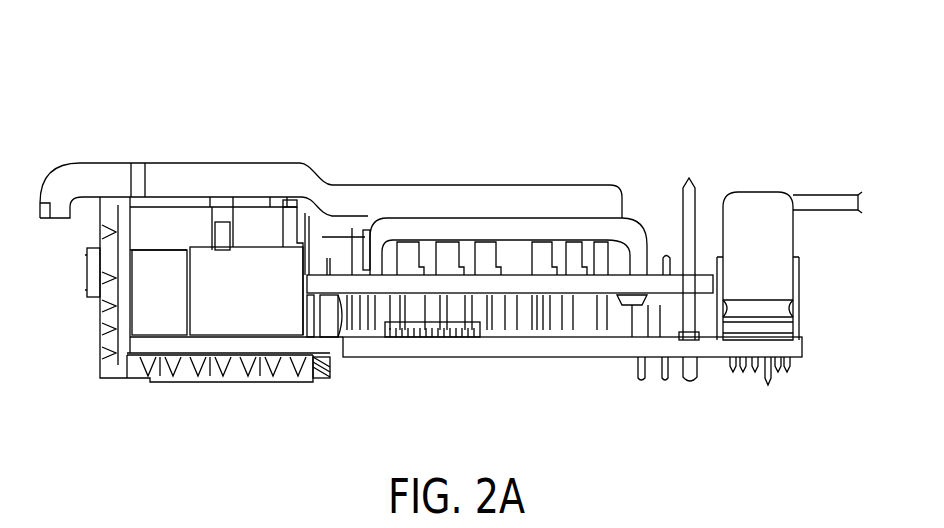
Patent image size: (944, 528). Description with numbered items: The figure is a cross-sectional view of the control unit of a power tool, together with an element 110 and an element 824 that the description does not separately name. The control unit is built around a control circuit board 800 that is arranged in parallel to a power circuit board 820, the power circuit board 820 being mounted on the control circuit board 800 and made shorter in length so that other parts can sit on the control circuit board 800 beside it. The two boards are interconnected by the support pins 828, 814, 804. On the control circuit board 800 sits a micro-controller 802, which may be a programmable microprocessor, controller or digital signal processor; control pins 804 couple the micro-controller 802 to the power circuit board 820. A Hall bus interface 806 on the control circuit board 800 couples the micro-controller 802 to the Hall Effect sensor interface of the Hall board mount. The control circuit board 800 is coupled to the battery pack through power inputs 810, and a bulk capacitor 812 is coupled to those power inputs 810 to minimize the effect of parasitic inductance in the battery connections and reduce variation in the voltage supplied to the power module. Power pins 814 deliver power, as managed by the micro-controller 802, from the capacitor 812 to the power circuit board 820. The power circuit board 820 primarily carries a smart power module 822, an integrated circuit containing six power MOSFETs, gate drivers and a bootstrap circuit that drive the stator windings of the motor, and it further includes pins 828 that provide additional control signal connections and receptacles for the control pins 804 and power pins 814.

The housing 110 is at (160, 230).
The control circuit board 800 is at (548, 345).
The micro-controller 802 is at (430, 338).
The control pins 804 is at (327, 323).
The Hall bus interface 806 is at (257, 312).
The power inputs 810 is at (843, 211).
The bulk capacitor 812 is at (780, 283).
The power pins 814 is at (689, 178).
The power circuit board 820 is at (340, 283).
The smart power module 822 is at (352, 230).
The tube 824 is at (507, 198).
The pins 828 is at (607, 248).